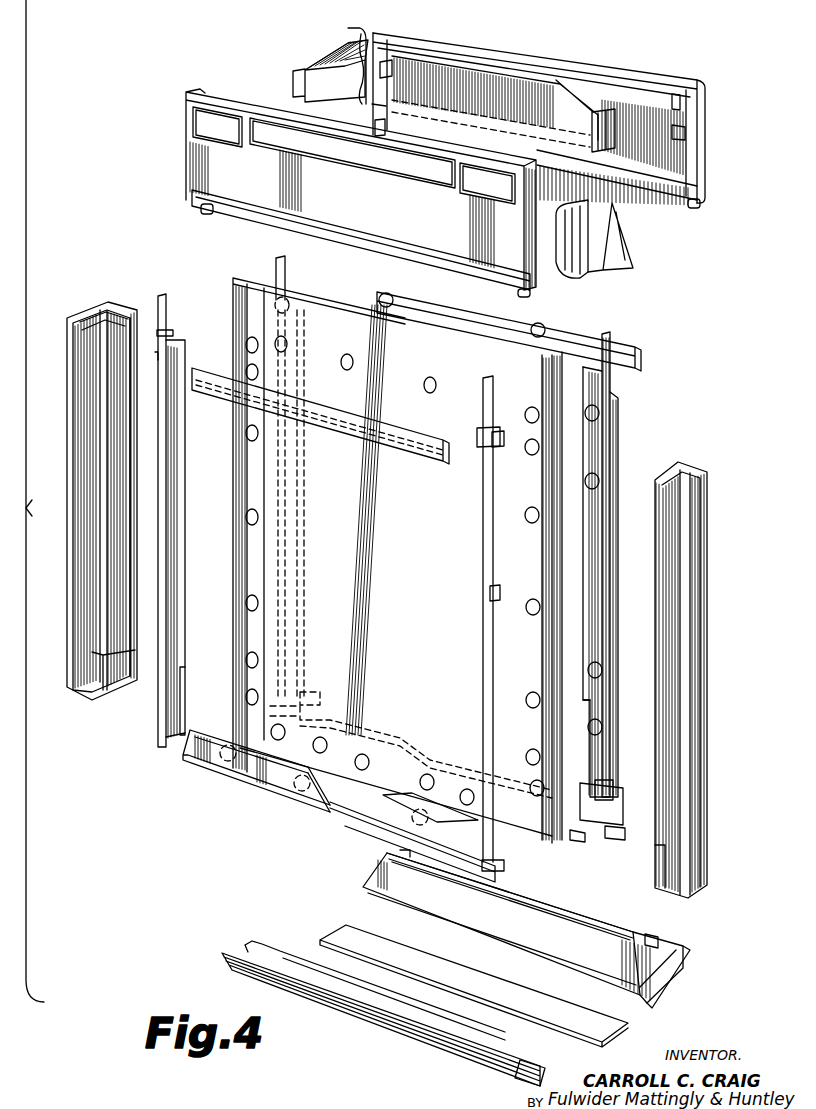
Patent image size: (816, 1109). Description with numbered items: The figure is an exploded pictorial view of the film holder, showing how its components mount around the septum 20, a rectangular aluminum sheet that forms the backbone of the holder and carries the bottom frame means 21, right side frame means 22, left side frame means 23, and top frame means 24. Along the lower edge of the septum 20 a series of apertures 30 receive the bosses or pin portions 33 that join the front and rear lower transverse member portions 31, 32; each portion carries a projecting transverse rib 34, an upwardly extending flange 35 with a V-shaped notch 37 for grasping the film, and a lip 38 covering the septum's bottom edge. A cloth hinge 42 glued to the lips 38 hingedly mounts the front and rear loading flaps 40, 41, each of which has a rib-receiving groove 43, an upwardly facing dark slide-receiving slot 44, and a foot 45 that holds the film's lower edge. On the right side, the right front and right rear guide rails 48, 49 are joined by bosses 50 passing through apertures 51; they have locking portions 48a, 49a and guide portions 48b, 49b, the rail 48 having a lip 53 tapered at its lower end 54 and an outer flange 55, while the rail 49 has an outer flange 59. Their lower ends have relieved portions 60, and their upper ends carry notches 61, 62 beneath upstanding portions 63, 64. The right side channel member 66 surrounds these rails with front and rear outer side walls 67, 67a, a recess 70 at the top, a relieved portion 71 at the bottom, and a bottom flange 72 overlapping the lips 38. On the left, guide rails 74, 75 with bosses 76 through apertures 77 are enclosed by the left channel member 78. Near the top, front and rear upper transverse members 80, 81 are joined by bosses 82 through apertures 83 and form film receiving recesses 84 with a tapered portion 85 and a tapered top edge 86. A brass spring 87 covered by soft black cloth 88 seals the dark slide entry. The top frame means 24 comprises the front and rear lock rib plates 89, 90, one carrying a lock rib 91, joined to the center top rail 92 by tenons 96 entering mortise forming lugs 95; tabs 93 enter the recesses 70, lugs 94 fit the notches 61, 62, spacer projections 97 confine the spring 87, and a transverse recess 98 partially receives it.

The septum 20 is at (397, 560).
The bottom frame means 21 is at (233, 886).
The right side frame means 22 is at (740, 682).
The left side frame means 23 is at (52, 512).
The top frame means 24 is at (589, 44).
The apertures 30 is at (348, 770).
The front lower transverse member portion 31 is at (247, 773).
The rear lower transverse member portion 32 is at (586, 826).
The bosses or pin portions 33 is at (298, 777).
The transverse rib 34 is at (392, 835).
The upwardly extending flange 35 is at (362, 826).
The V-shaped notch 37 is at (326, 812).
The lip 38 is at (574, 834).
The front loading flap 40 is at (462, 1055).
The rear loading flap 41 is at (638, 934).
The cloth hinge 42 is at (608, 1041).
The rib-receiving groove 43 is at (458, 930).
The dark slide-receiving slot 44 is at (665, 963).
The foot 45 is at (568, 899).
The right front guide rail 48 is at (488, 666).
The locking portion 48a is at (478, 433).
The guide portion 48b is at (482, 595).
The right rear guide rail 49 is at (603, 630).
The locking portion 49a is at (174, 339).
The guide portion 49b is at (170, 520).
The bosses 50 is at (588, 421).
The apertures 51 is at (533, 407).
The lip 53 is at (184, 580).
The tapered lower end 54 is at (186, 666).
The outer flange 55 is at (499, 603).
The outer flange 59 is at (614, 500).
The relieved portion 60 is at (306, 696).
The recess or notch 61 is at (505, 440).
The recess or notch 62 is at (154, 340).
The upstanding portion 63 is at (275, 262).
The upstanding portion 64 is at (172, 328).
The right side channel member 66 is at (707, 660).
The front outer side wall 67 is at (133, 428).
The rear outer side wall 67a is at (87, 456).
The recess 70 is at (108, 302).
The relieved portion 71 is at (148, 676).
The bottom flange 72 is at (115, 693).
The left front guide rail 74 is at (178, 556).
The left rear guide rail 75 is at (288, 283).
The bosses 76 is at (192, 372).
The apertures 77 is at (250, 510).
The left channel member 78 is at (78, 608).
The front upper transverse member 80 is at (365, 427).
The rear upper transverse member 81 is at (474, 314).
The bosses 82 is at (402, 299).
The apertures 83 is at (288, 343).
The film receiving recess 84 is at (641, 352).
The tapered portion 85 is at (641, 362).
The tapered top edge 86 is at (344, 420).
The brass spring 87 is at (580, 215).
The soft black cloth 88 is at (620, 208).
The front lock rib plate 89 is at (361, 189).
The rear lock rib plate 90 is at (618, 85).
The lock rib 91 is at (215, 200).
The center top rail 92 is at (500, 72).
The downwardly extending tabs 93 is at (210, 213).
The lugs 94 is at (386, 125).
The mortise forming lug 95 is at (405, 45).
The tenons 96 is at (303, 66).
The spacer projection 97 is at (394, 69).
The transverse recess 98 is at (690, 158).